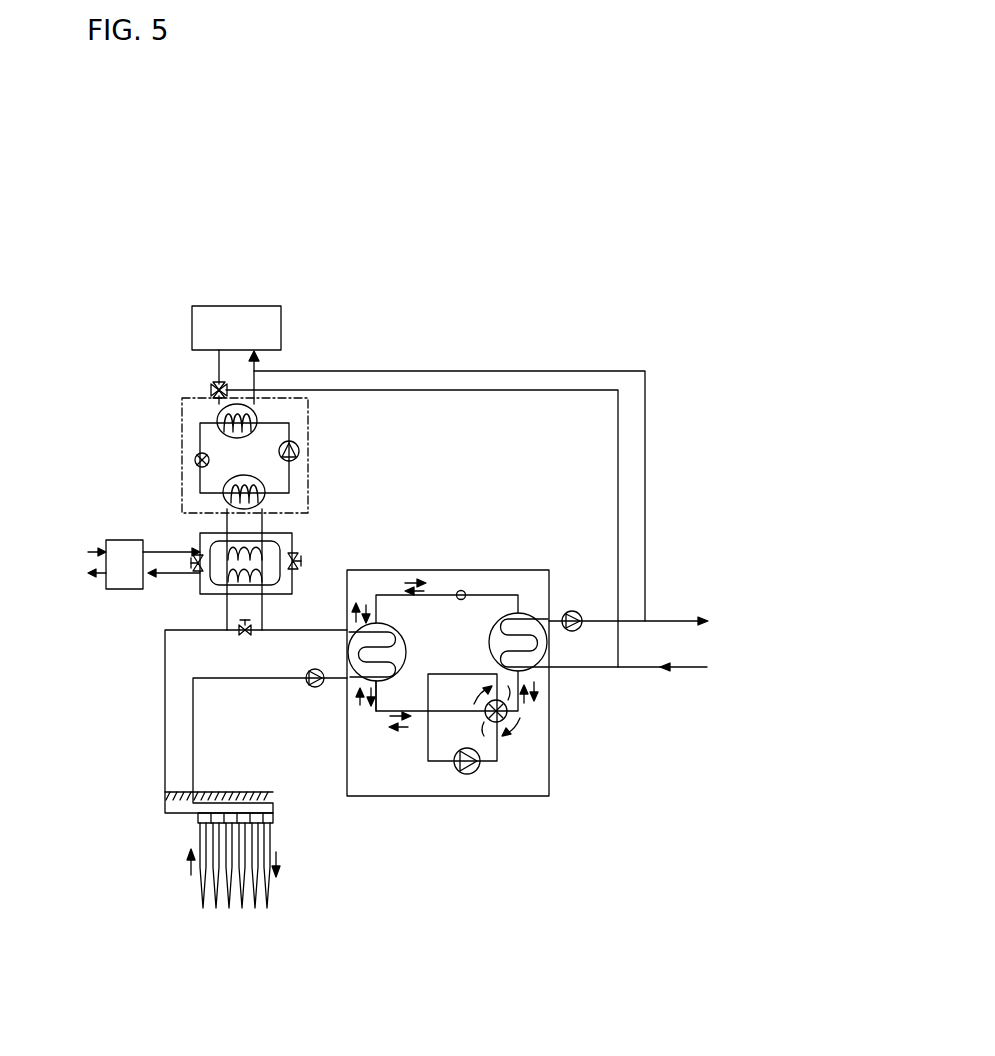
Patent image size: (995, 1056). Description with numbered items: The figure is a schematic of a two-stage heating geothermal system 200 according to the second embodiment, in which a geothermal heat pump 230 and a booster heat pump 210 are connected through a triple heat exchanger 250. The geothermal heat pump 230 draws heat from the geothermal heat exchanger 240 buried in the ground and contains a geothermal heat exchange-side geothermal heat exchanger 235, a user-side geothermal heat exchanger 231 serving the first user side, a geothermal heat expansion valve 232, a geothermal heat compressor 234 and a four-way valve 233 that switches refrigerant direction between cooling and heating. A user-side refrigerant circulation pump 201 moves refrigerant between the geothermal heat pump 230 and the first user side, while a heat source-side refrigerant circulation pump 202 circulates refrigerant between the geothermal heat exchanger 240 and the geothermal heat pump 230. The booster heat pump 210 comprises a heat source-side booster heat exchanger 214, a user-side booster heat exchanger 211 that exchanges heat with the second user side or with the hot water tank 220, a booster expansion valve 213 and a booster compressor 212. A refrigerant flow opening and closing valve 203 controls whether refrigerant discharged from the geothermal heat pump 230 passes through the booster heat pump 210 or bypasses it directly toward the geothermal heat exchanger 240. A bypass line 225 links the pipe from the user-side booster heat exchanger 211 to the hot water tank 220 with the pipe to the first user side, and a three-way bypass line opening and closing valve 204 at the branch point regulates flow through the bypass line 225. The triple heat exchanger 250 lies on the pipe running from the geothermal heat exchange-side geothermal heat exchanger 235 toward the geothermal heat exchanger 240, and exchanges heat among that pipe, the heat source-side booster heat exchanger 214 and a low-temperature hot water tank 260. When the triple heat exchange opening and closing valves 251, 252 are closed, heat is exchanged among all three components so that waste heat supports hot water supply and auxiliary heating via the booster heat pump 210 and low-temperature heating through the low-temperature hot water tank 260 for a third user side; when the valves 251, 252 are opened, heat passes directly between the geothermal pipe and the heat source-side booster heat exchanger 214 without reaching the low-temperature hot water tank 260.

The two-stage heating geothermal system 200 is at (432, 318).
The user-side refrigerant circulation pump 201 is at (570, 610).
The heat source-side refrigerant circulation pump 202 is at (311, 686).
The refrigerant flow opening and closing valve 203 is at (244, 636).
The bypass line opening and closing valve 204 is at (208, 384).
The booster heat pump 210 is at (93, 385).
The user-side booster heat exchanger 211 is at (212, 409).
The booster compressor 212 is at (279, 449).
The booster expansion valve 213 is at (196, 462).
The heat source-side booster heat exchanger 214 is at (237, 493).
The hot water tank 220 is at (241, 318).
The bypass line 225 is at (585, 371).
The geothermal heat pump 230 is at (650, 737).
The user-side geothermal heat exchanger 231 is at (535, 650).
The geothermal heat expansion valve 232 is at (464, 598).
The four-way valve 233 is at (505, 722).
The geothermal heat compressor 234 is at (478, 770).
The geothermal heat exchange-side geothermal heat exchanger 235 is at (373, 683).
The geothermal heat exchanger 240 is at (258, 833).
The triple heat exchanger 250 is at (292, 533).
The triple heat exchange opening and closing valve 251 is at (198, 570).
The triple heat exchange opening and closing valve 252 is at (302, 560).
The low-temperature hot water tank 260 is at (125, 572).